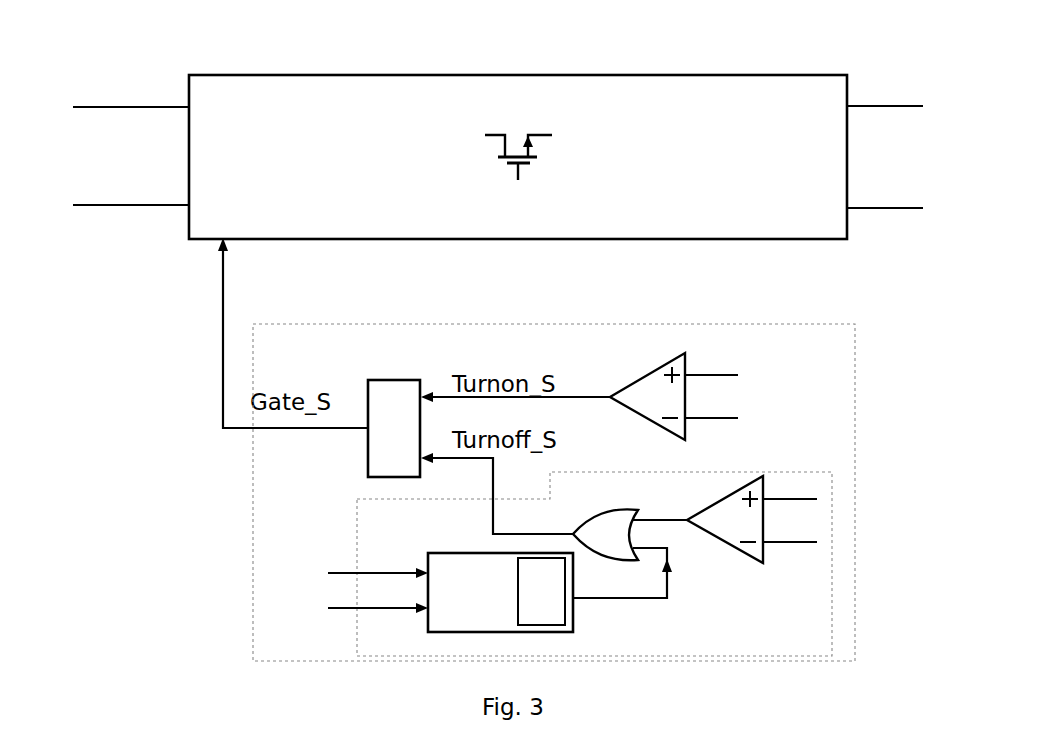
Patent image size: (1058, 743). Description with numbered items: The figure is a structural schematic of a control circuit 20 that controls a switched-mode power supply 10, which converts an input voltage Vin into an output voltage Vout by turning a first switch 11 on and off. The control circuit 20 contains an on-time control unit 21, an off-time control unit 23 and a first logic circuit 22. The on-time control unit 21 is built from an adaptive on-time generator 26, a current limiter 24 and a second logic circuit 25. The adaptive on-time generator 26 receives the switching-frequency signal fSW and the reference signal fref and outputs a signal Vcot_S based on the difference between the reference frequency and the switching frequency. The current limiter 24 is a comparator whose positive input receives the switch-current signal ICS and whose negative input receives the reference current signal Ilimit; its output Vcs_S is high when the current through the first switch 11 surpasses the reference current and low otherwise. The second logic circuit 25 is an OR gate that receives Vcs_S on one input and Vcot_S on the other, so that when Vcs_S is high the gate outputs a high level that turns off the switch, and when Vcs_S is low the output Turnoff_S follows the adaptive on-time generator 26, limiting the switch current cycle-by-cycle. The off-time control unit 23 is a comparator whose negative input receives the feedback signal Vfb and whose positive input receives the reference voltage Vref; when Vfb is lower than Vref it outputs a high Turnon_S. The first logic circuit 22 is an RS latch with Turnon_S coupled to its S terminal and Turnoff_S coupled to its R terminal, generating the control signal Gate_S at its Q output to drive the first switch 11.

The switched-mode power supply 10 is at (783, 68).
The first switch 11 is at (541, 165).
The control circuit 20 is at (554, 492).
The on-time control unit 21 is at (594, 565).
The first logic circuit 22 is at (384, 380).
The off-time control unit 23 is at (620, 385).
The current limiter 24 is at (722, 545).
The second logic circuit 25 is at (612, 498).
The adaptive on-time generator 26 is at (503, 632).